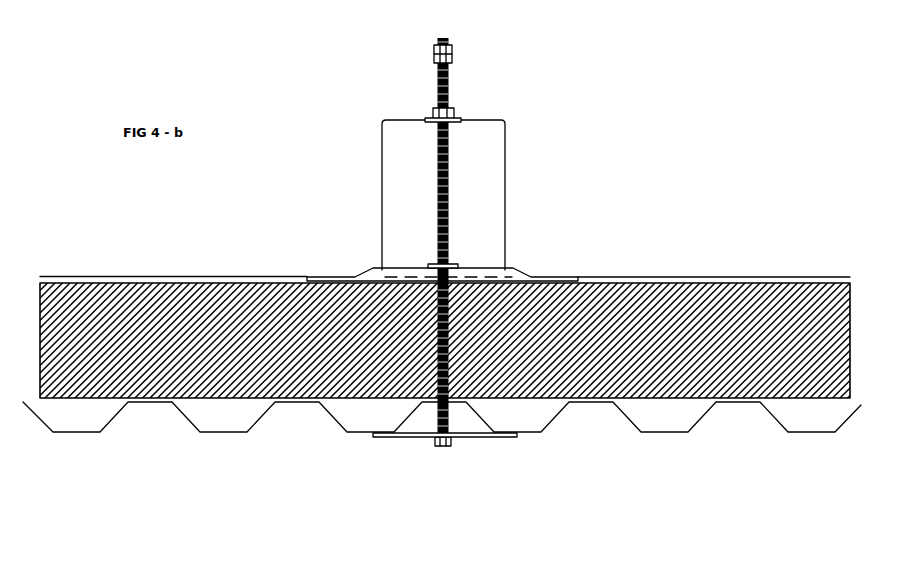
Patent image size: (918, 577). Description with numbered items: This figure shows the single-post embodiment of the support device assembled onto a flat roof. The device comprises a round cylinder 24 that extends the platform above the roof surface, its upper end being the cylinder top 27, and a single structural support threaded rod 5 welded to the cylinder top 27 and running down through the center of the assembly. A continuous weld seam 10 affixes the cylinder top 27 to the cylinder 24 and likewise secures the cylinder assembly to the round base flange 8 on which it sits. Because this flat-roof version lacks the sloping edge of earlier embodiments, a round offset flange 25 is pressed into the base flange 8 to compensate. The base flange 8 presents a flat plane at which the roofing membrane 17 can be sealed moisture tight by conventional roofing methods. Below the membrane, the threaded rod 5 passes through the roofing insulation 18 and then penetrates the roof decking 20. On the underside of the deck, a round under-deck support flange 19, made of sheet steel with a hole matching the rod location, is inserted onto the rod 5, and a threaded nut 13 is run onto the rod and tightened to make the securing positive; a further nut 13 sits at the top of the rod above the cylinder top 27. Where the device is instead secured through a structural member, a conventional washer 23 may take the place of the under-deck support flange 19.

The structural support threaded rod 5 is at (446, 176).
The round base flange 8 is at (552, 278).
The continuous weld seam 10 is at (430, 117).
The threaded nut 13 is at (431, 116).
The roofing membrane 17 is at (553, 277).
The roofing insulation 18 is at (222, 374).
The under-deck support flange 19 is at (403, 437).
The roof decking 20 is at (652, 432).
The washer 23 is at (453, 100).
The round cylinder 24 is at (403, 182).
The round offset flange 25 is at (517, 268).
The cylinder top 27 is at (472, 118).